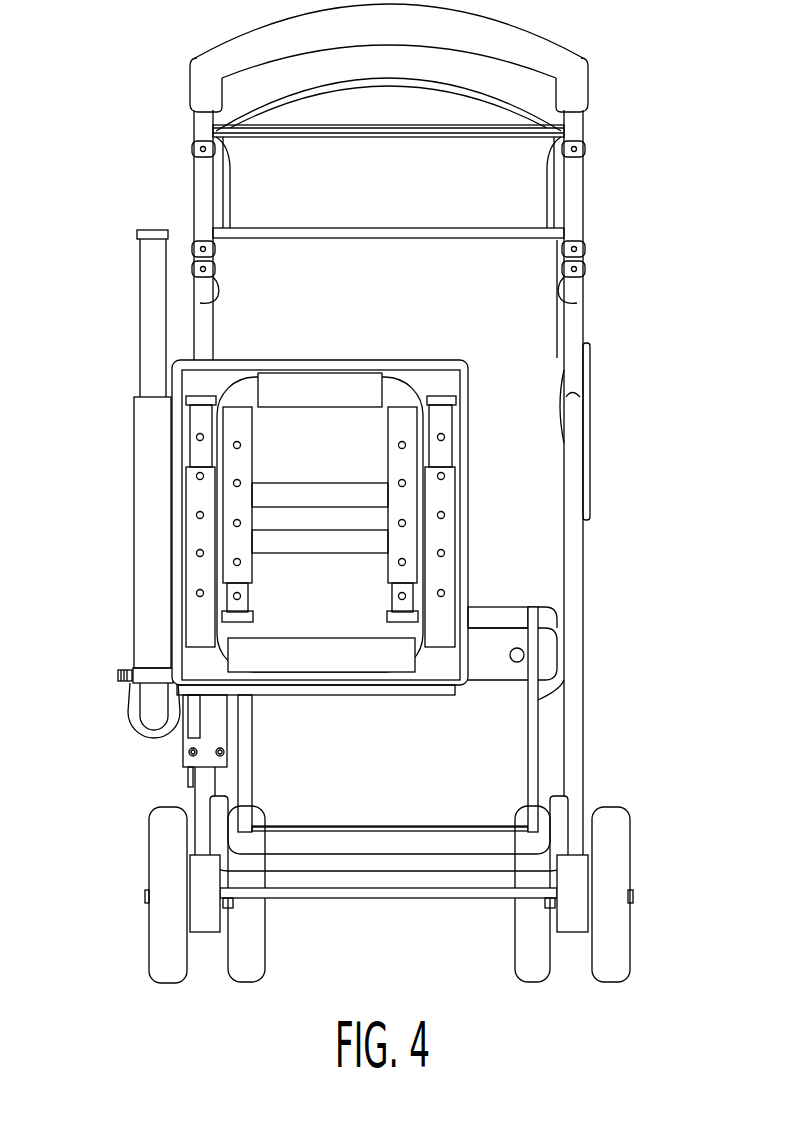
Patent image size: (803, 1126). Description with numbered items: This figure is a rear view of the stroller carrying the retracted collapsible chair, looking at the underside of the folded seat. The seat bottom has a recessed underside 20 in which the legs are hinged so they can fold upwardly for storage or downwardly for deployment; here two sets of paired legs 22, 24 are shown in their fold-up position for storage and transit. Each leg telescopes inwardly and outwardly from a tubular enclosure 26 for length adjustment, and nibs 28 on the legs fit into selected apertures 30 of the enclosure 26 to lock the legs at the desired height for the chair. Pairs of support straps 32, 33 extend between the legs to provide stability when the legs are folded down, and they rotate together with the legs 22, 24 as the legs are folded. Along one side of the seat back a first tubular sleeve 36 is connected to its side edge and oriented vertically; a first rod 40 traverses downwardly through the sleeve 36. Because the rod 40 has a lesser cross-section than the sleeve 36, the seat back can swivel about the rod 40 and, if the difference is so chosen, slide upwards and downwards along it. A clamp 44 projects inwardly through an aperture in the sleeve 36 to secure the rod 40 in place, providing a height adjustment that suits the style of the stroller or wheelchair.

The recessed underside 20 is at (223, 368).
The paired legs 22 is at (200, 397).
The paired legs 24 is at (443, 395).
The tubular enclosure 26 is at (243, 460).
The nibs 28 is at (197, 437).
The apertures 30 is at (200, 515).
The support strap 32 is at (332, 495).
The support strap 33 is at (313, 548).
The first tubular sleeve 36 is at (143, 490).
The first rod 40 is at (140, 268).
The clamp 44 is at (125, 676).